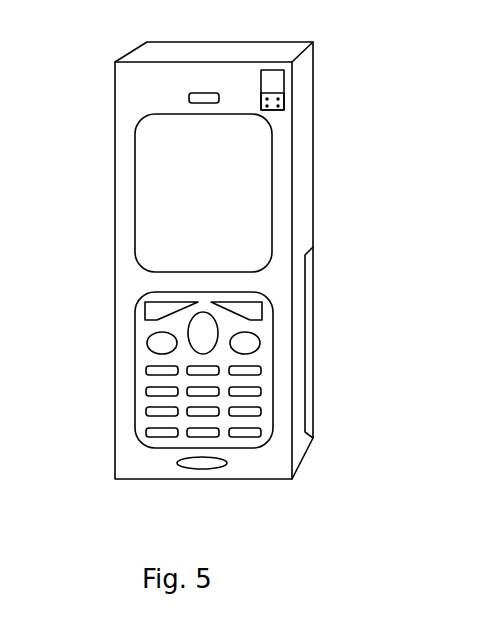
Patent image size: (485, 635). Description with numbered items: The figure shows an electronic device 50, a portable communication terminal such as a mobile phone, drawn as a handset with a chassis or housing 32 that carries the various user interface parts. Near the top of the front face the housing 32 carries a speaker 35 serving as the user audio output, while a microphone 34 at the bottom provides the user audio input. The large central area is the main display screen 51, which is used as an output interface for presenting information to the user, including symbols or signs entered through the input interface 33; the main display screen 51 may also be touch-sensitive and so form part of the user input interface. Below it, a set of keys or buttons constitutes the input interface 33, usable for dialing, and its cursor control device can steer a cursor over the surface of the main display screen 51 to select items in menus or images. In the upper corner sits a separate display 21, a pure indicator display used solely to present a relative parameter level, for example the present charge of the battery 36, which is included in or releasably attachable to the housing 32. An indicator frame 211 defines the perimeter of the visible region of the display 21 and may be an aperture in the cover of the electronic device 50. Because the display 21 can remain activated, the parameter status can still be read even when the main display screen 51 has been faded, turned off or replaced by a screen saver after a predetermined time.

The electronic device 50 is at (219, 264).
The housing 32 is at (114, 88).
The speaker 35 is at (186, 100).
The display 21 is at (277, 78).
The indicator frame 211 is at (261, 82).
The main display screen 51 is at (211, 201).
The input interface 33 is at (140, 340).
The microphone 34 is at (195, 470).
The battery 36 is at (305, 375).